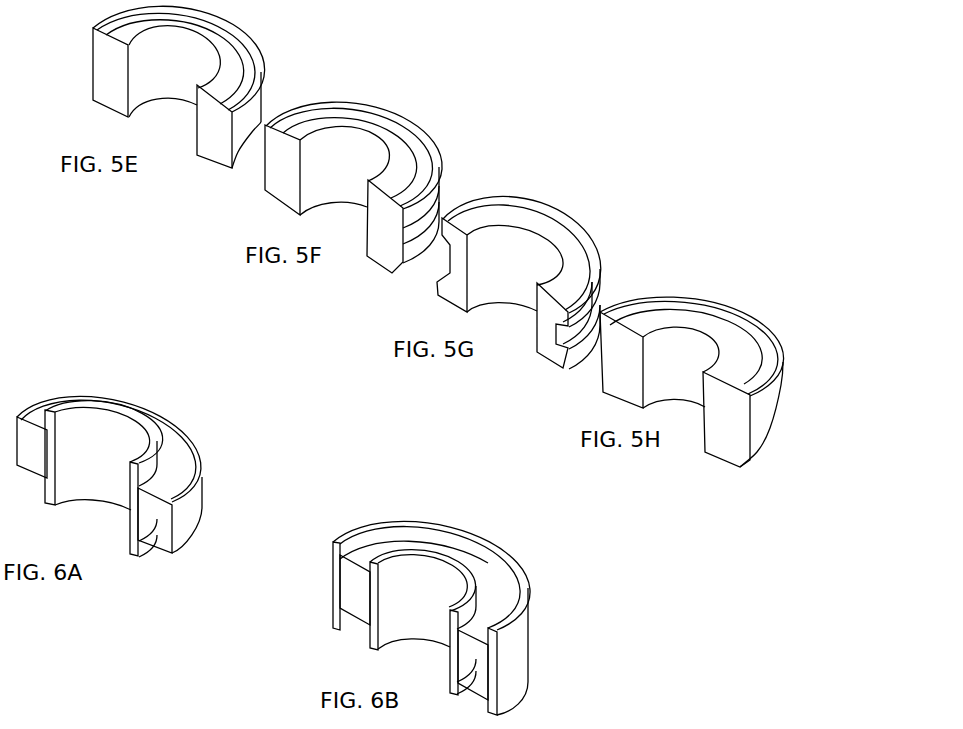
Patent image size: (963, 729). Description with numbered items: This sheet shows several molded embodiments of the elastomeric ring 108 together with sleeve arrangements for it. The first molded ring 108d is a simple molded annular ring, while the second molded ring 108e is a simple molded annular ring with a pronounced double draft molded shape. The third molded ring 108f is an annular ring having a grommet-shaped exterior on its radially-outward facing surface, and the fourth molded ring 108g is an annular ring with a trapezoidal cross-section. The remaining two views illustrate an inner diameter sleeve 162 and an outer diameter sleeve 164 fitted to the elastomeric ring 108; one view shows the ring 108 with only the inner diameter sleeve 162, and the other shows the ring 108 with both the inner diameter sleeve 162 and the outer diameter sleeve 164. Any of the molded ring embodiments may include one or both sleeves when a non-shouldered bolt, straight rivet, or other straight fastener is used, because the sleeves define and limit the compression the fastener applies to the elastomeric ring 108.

In FIG. 5E, the simple molded annular ring 108d is at (234, 38).
In FIG. 5F, the simple molded annular ring with pronounced double draft molded shape 108e is at (415, 152).
In FIG. 5G, the annular ring having grommet-shaped exterior 108f is at (584, 245).
In FIG. 5H, the annular ring with trapezoidal cross-section 108g is at (768, 355).
In FIG. 6A, the elastomeric ring 108 is at (170, 430).
In FIG. 6B, the elastomeric ring 108 is at (487, 580).
In FIG. 6A, the inner diameter sleeve 162 is at (98, 450).
In FIG. 6B, the inner diameter sleeve 162 is at (413, 580).
In FIG. 6B, the outer diameter sleeve 164 is at (525, 653).